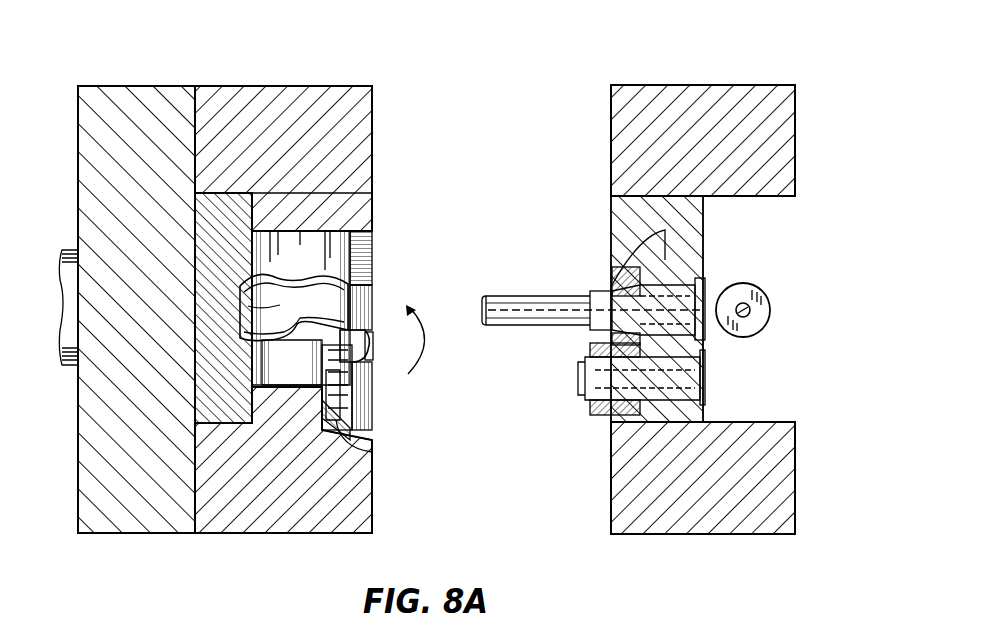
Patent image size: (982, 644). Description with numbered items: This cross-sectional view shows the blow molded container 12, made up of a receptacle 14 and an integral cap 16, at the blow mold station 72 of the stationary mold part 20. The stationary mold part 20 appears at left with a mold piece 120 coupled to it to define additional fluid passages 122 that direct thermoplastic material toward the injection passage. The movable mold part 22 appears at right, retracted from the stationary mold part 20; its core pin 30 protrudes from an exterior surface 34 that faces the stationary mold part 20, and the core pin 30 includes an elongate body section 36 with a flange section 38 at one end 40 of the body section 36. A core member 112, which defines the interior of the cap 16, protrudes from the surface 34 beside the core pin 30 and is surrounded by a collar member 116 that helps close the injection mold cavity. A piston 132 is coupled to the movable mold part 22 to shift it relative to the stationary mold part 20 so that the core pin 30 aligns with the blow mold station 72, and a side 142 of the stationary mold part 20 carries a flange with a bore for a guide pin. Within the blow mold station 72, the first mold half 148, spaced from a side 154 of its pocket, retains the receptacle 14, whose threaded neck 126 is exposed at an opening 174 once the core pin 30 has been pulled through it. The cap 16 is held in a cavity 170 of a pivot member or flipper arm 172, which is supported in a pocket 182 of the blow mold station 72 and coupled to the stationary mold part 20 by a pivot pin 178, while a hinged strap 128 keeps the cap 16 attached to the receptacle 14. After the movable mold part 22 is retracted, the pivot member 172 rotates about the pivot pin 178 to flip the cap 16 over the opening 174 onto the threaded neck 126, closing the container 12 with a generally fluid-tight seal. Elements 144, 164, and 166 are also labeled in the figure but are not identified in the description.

The container 12 is at (305, 278).
The receptacle 14 is at (264, 294).
The integral cap 16 is at (320, 374).
The stationary mold part 20 is at (256, 84).
The movable mold part 22 is at (652, 83).
The core pin 30 is at (492, 292).
The exterior surface 34 is at (611, 130).
The elongate body section 36 is at (495, 326).
The flange section 38 is at (602, 292).
The end 40 is at (596, 298).
The blow mold station 72 is at (185, 296).
The core member 112 is at (578, 378).
The collar member 116 is at (596, 414).
The mold piece 120 is at (140, 86).
The fluid passages 122 is at (62, 366).
The threaded neck 126 is at (362, 288).
The hinged strap 128 is at (330, 330).
The piston 132 is at (772, 312).
The side 142 is at (662, 284).
The pin bore 144 is at (665, 232).
The first mold half 148 is at (372, 245).
The side of the pocket 154 is at (345, 378).
The pin shaft 164 is at (522, 296).
The pin axis 166 is at (532, 318).
The cavity 170 is at (350, 395).
The pivot member 172 is at (372, 452).
The opening 174 is at (372, 306).
The pivot pin 178 is at (396, 340).
The pocket 182 is at (372, 421).